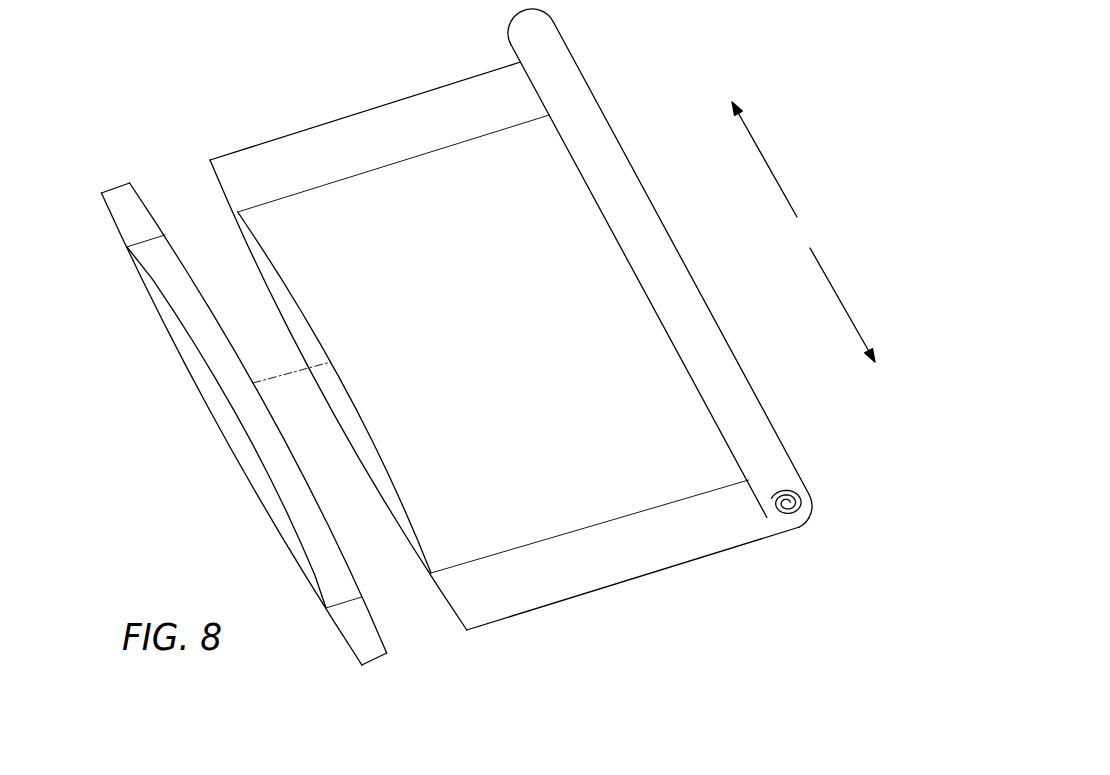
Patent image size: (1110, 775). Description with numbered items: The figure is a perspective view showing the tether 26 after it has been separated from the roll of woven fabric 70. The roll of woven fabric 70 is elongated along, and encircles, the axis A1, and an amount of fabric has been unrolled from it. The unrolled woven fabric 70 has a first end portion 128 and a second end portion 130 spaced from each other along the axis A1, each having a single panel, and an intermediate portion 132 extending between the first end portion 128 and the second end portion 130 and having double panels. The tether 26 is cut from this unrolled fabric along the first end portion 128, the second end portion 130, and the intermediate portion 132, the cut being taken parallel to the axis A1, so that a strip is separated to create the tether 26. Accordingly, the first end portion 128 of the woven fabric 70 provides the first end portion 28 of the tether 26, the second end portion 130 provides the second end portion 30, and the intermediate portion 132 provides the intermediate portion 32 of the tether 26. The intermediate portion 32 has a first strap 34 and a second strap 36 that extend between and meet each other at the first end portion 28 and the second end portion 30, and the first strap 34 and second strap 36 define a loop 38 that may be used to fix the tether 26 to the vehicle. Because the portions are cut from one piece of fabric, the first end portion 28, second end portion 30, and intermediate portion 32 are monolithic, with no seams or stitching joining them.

The tether 26 is at (253, 419).
The first end portion 28 is at (360, 640).
The second end portion 30 is at (123, 207).
The intermediate portion 32 is at (217, 430).
The first strap 34 is at (245, 478).
The second strap 36 is at (278, 512).
The loop 38 is at (205, 381).
The roll of woven fabric 70 is at (702, 318).
The first end portion 128 is at (757, 518).
The second end portion 130 is at (517, 88).
The intermediate portion 132 is at (617, 270).
The axis A1 is at (803, 232).